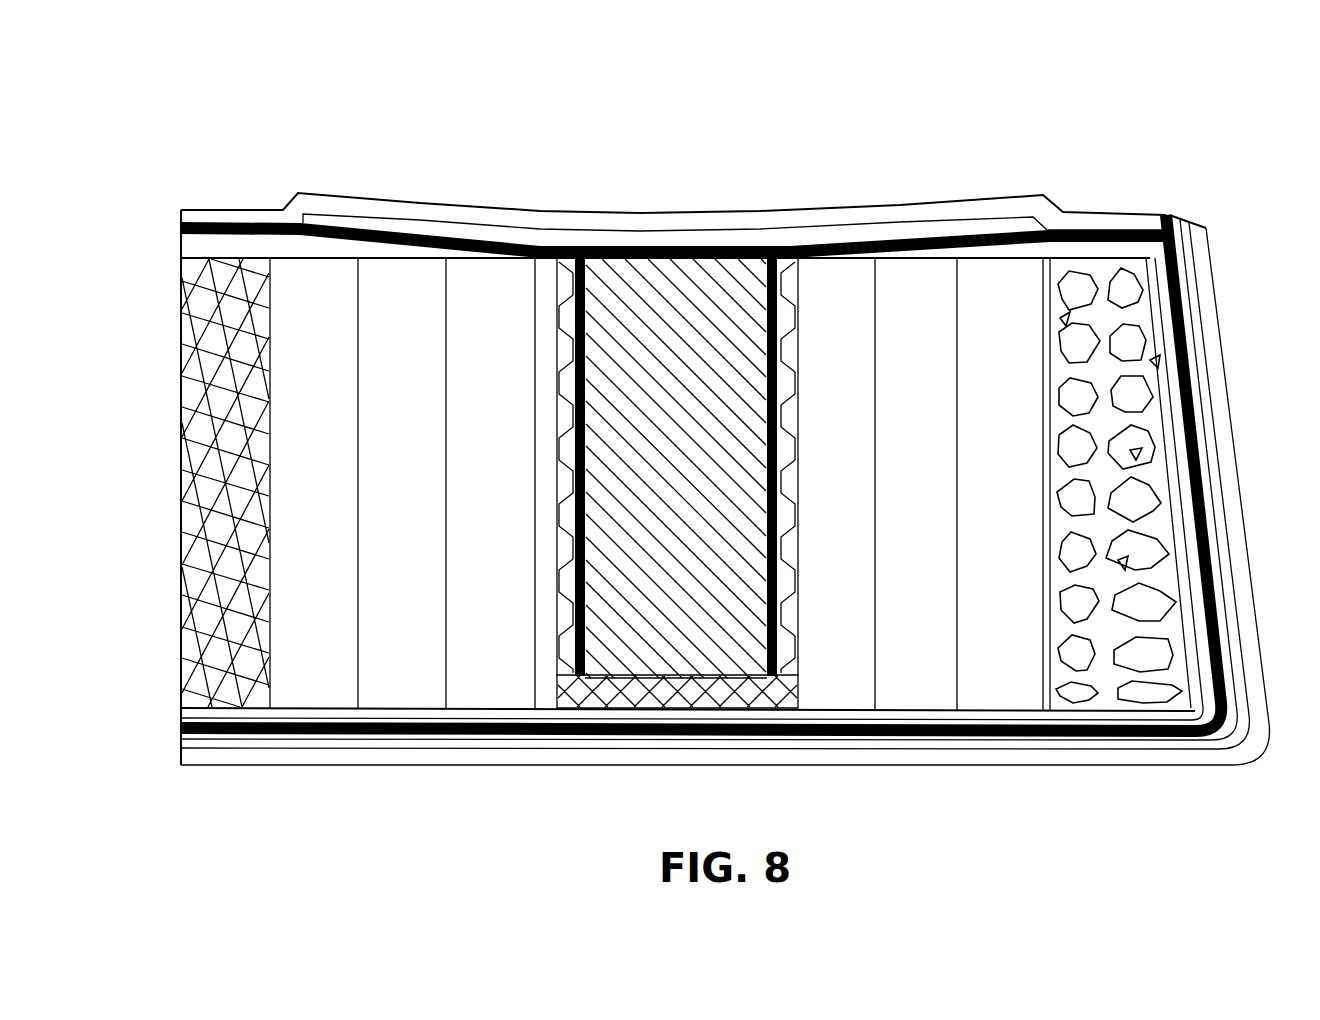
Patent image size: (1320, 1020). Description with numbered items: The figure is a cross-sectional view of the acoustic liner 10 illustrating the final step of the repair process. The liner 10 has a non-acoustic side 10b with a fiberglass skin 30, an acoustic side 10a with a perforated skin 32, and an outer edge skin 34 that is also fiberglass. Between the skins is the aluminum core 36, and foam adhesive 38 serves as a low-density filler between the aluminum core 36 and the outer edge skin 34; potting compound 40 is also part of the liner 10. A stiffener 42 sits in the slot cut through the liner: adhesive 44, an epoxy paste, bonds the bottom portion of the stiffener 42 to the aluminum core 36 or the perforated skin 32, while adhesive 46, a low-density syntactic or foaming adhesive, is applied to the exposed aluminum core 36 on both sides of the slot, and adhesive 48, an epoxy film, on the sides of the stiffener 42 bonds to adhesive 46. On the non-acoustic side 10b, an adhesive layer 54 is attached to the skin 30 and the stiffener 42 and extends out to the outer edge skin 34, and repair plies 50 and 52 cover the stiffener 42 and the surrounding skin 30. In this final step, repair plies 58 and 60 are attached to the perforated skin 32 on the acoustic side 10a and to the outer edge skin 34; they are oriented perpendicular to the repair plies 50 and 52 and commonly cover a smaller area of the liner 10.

The liner 10 is at (442, 66).
The acoustic side 10a is at (178, 777).
The non-acoustic side 10b is at (180, 188).
The fiberglass skin 30 is at (240, 248).
The perforated skin 32 is at (486, 713).
The outer edge skin 34 is at (1180, 468).
The aluminum core 36 is at (295, 275).
The foam adhesive 38 is at (1157, 543).
The potting compound 40 is at (193, 410).
The stiffener 42 is at (680, 280).
The adhesive 44 is at (677, 691).
The adhesive 46 is at (570, 310).
The adhesive 48 is at (578, 370).
The repair ply 50 is at (428, 223).
The repair ply 52 is at (518, 222).
The adhesive layer 54 is at (367, 225).
The repair ply 58 is at (1195, 326).
The repair ply 60 is at (1217, 386).